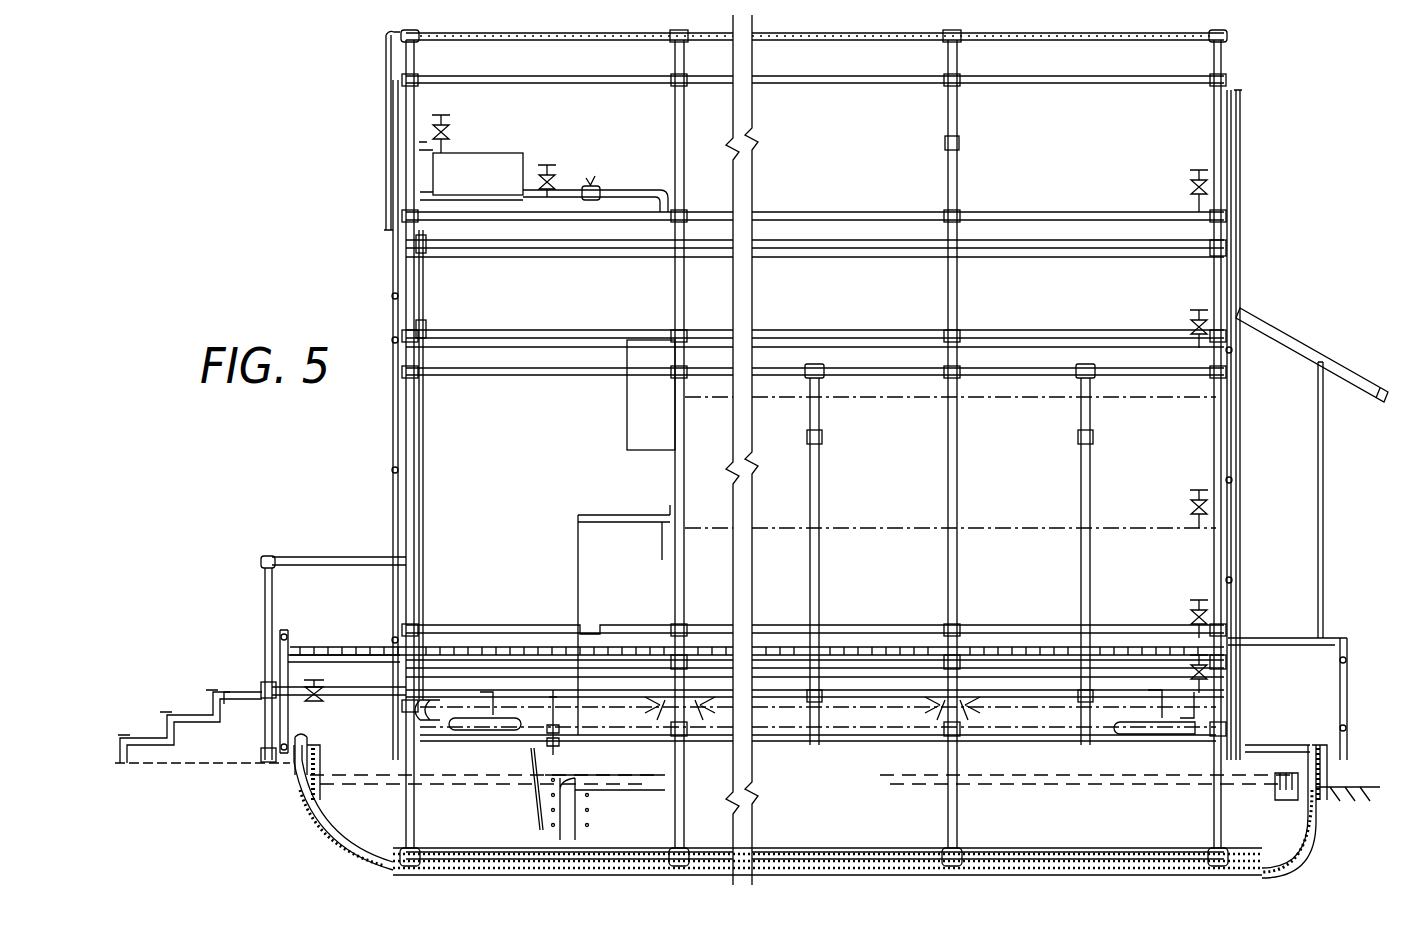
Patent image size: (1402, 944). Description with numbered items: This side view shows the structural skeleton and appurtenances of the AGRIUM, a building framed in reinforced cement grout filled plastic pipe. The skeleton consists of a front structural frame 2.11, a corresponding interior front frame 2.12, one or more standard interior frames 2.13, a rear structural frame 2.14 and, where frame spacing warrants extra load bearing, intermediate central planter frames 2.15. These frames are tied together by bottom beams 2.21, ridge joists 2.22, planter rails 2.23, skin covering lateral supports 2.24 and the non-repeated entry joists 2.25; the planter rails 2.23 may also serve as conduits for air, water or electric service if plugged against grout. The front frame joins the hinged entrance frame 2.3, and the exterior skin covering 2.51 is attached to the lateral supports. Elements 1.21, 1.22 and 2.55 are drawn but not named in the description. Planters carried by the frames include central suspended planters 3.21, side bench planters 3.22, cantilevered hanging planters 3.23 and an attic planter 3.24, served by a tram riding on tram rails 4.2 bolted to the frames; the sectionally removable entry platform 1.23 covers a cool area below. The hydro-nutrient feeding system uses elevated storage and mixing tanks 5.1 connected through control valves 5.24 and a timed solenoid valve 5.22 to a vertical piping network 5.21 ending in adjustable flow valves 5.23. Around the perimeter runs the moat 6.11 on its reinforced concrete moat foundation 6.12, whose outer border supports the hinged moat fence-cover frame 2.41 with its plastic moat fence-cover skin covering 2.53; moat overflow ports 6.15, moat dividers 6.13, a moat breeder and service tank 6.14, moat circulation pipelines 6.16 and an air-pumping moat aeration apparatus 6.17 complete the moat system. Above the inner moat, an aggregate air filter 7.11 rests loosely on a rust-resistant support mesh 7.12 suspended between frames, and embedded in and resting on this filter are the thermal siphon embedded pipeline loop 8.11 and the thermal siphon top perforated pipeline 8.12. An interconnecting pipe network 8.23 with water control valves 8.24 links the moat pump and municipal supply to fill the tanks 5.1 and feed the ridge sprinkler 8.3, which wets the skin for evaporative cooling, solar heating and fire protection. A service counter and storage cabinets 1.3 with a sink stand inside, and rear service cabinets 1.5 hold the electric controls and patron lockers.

The water supply inlet pipe 1.21 is at (215, 708).
The inlet valve 1.22 is at (350, 657).
The sectionally removeable entry platform 1.23 is at (518, 598).
The service counter and storage cabinets 1.3 is at (648, 452).
The rear service cabinets 1.5 is at (1324, 492).
The front structural frame 2.11 is at (418, 287).
The interior front frame 2.12 is at (675, 291).
The standard interior frames 2.13 is at (946, 294).
The rear structural frame 2.14 is at (1216, 289).
The intermediate central planter frames 2.15 is at (820, 418).
The bottom beams 2.21 is at (812, 855).
The ridge joists 2.22 is at (805, 75).
The planter rails 2.23 is at (980, 212).
The skin covering lateral supports 2.24 is at (392, 480).
The entry joists 2.25 is at (638, 598).
The entrance frame 2.3 is at (262, 580).
The hinged moat fence-cover frames 2.41 is at (288, 652).
The exterior skin covering 2.51 is at (390, 428).
The moat fence-cover skin covering 2.53 is at (278, 635).
The inclined roof bar 2.55 is at (1255, 318).
The central suspended planters 3.21 is at (990, 397).
The side bench planters 3.22 is at (848, 598).
The cantilevered hanging planters 3.23 is at (572, 305).
The attic planter 3.24 is at (878, 196).
The tram rails 4.2 is at (830, 670).
The elevated storage and mixing tanks 5.1 is at (490, 160).
The vertical piping network 5.21 is at (1182, 427).
The solenoid valve 5.22 is at (592, 178).
The adjustable flow valves 5.23 is at (1198, 172).
The control valves 5.24 is at (548, 163).
The moat 6.11 is at (378, 830).
The moat foundation 6.12 is at (320, 808).
The moat dividers 6.13 is at (362, 742).
The moat breeder and service tank 6.14 is at (462, 745).
The moat overflow ports 6.15 is at (315, 755).
The moat circulation pipelines 6.16 is at (647, 798).
The moat aeration apparatus 6.17 is at (545, 760).
The aggregate air filter 7.11 is at (930, 740).
The aggregate air filter support mesh 7.12 is at (855, 740).
The thermal siphon embedded pipeline loop 8.11 is at (1140, 730).
The thermal siphon top perforated pipeline 8.12 is at (1055, 700).
The interconnecting pipe network 8.23 is at (424, 405).
The water control valves 8.24 is at (440, 118).
The ridge sprinkler 8.3 is at (545, 40).